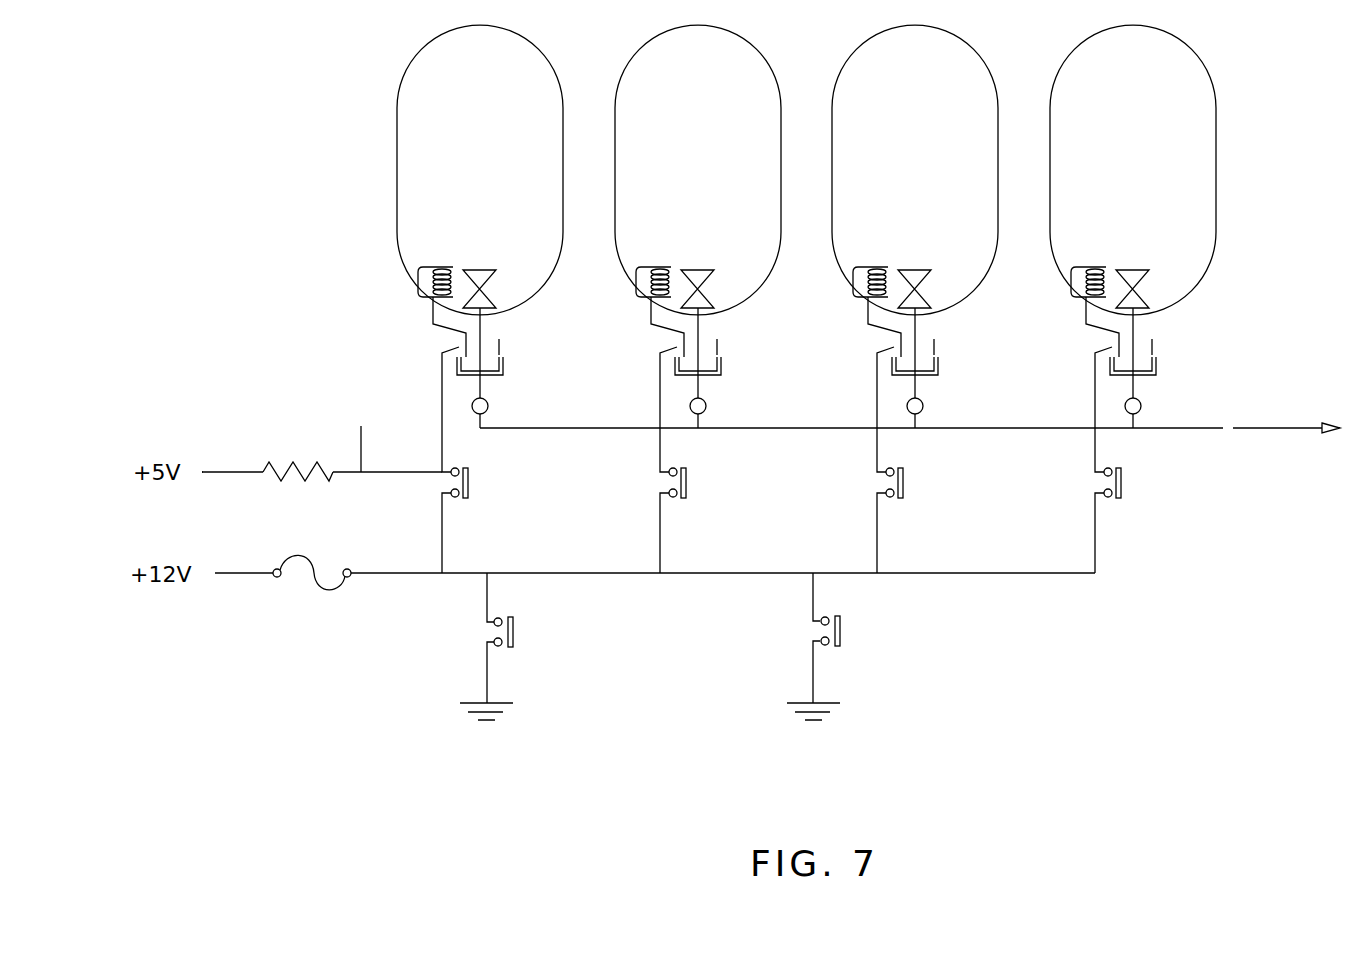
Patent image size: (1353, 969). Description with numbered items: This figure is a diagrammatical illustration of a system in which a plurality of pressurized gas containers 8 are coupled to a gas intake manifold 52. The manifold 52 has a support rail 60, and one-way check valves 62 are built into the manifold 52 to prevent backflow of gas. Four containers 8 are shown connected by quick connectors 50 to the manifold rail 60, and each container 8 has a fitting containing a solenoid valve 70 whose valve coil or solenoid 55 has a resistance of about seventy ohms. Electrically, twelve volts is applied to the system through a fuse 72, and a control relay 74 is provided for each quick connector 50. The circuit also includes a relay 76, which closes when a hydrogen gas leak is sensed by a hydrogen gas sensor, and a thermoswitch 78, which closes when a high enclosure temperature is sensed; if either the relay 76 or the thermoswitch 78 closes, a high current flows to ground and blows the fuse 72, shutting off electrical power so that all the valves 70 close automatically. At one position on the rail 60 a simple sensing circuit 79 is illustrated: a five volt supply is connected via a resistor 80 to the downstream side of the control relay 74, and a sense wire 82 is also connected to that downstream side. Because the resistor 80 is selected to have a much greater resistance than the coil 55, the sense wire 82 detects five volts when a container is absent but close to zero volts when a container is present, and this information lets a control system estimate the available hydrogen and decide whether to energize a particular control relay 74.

The pressurized gas container 8 is at (412, 102).
The valve coil 55 is at (440, 264).
The solenoid valve 70 is at (493, 289).
The quick connector 50 is at (511, 368).
The one-way check valve 62 is at (494, 406).
The support rail 60 is at (975, 430).
The gas intake manifold 52 is at (1245, 402).
The control relay 74 is at (482, 488).
The relay 76 is at (525, 640).
The thermoswitch 78 is at (853, 638).
The resistor 80 is at (288, 454).
The sense wire 82 is at (367, 432).
The sensing circuit 79 is at (238, 413).
The fuse 72 is at (306, 594).